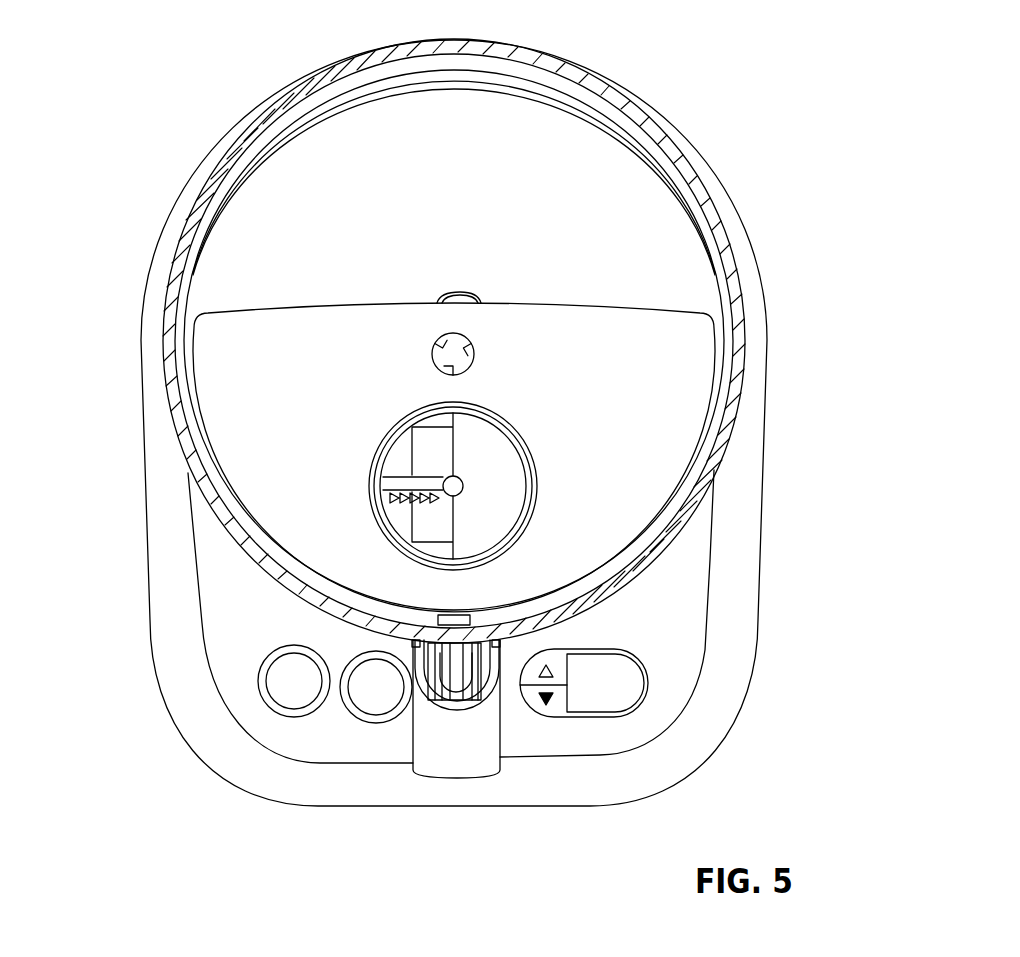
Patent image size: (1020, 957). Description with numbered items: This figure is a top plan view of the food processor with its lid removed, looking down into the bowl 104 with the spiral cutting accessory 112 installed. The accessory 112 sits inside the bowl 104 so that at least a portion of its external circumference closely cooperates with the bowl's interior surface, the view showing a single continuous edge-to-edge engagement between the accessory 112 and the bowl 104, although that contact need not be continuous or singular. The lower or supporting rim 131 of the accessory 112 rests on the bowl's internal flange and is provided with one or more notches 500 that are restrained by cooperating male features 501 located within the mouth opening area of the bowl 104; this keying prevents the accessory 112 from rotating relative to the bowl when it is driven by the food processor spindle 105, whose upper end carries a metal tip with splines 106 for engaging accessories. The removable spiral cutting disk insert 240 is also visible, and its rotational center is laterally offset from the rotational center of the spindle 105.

The bowl 104 is at (676, 152).
The food processor spindle 105 is at (460, 333).
The splines 106 is at (474, 352).
The spiral cutting accessory 112 is at (652, 368).
The lower rim 131 is at (645, 548).
The spiral cutting disk insert 240 is at (395, 423).
The notches 500 is at (480, 596).
The cooperating male features 501 is at (468, 612).